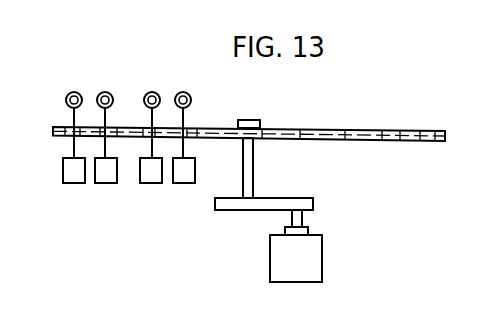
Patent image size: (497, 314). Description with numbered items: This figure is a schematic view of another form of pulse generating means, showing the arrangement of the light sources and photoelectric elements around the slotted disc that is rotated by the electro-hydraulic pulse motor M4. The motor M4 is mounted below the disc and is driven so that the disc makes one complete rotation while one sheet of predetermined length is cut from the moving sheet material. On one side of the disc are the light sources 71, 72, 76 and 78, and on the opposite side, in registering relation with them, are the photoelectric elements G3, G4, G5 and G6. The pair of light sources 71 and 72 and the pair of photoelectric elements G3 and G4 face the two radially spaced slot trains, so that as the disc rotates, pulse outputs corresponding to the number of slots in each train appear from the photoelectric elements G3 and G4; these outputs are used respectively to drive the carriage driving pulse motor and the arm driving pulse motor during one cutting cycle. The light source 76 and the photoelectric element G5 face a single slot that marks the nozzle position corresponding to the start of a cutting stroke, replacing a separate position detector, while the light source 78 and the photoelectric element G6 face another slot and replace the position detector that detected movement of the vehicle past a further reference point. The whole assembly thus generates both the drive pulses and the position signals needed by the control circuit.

The light source 71 is at (73, 92).
The light source 72 is at (104, 92).
The light source 76 is at (151, 92).
The light source 78 is at (182, 92).
The photoelectric element G3 is at (73, 184).
The photoelectric element G4 is at (108, 184).
The photoelectric element G5 is at (153, 184).
The photoelectric element G6 is at (192, 184).
The electro-hydraulic pulse motor M4 is at (296, 258).